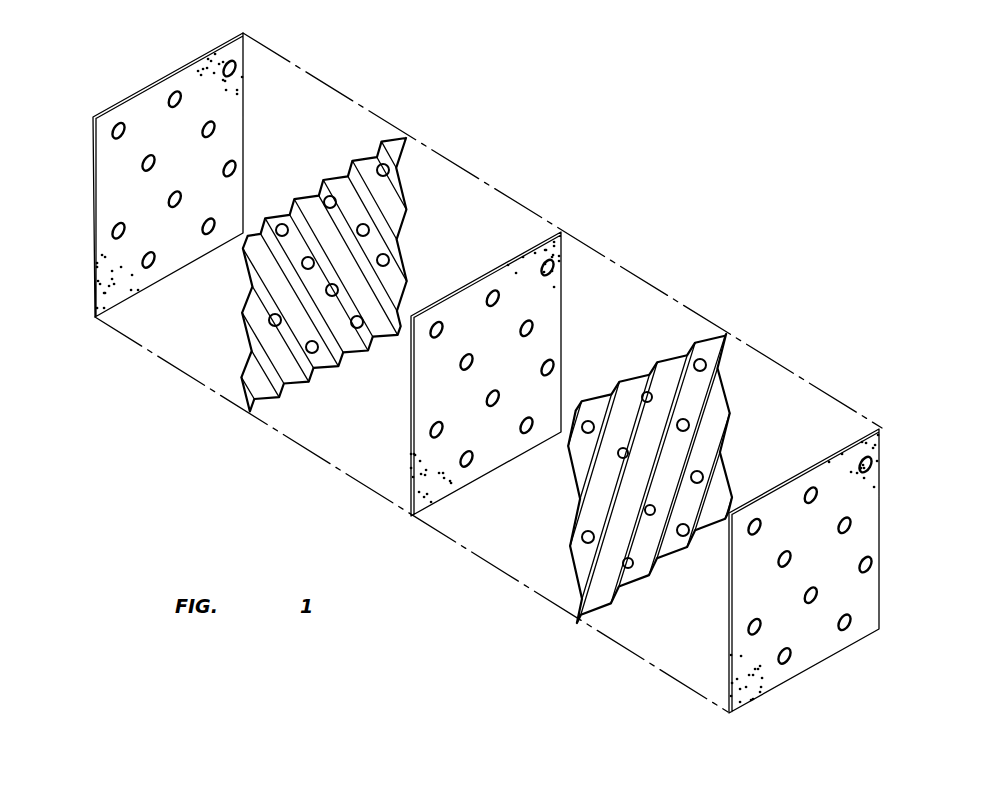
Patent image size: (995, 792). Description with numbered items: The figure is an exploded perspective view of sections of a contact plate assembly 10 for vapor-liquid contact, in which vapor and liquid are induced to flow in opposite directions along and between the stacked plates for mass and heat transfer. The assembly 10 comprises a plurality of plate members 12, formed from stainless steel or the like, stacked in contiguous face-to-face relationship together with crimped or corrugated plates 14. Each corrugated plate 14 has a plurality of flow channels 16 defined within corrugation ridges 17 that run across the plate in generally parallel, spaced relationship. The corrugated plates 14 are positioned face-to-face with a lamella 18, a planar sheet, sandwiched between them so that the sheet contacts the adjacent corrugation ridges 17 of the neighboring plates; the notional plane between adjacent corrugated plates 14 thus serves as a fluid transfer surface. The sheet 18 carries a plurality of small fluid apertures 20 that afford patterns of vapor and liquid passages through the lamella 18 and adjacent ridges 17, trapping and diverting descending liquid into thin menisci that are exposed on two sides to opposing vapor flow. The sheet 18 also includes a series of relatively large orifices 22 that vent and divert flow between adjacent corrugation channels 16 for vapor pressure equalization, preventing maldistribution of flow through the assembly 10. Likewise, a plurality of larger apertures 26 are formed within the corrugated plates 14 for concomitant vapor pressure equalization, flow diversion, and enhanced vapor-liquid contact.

The contact plate assembly 10 is at (556, 198).
The plate member 12 is at (97, 313).
The corrugated plate 14 is at (393, 143).
The flow channel 16 is at (366, 149).
The corrugation ridge 17 is at (405, 207).
The lamella 18 is at (138, 108).
The fluid aperture 20 is at (228, 92).
The orifice 22 is at (234, 70).
The larger aperture 26 is at (390, 260).